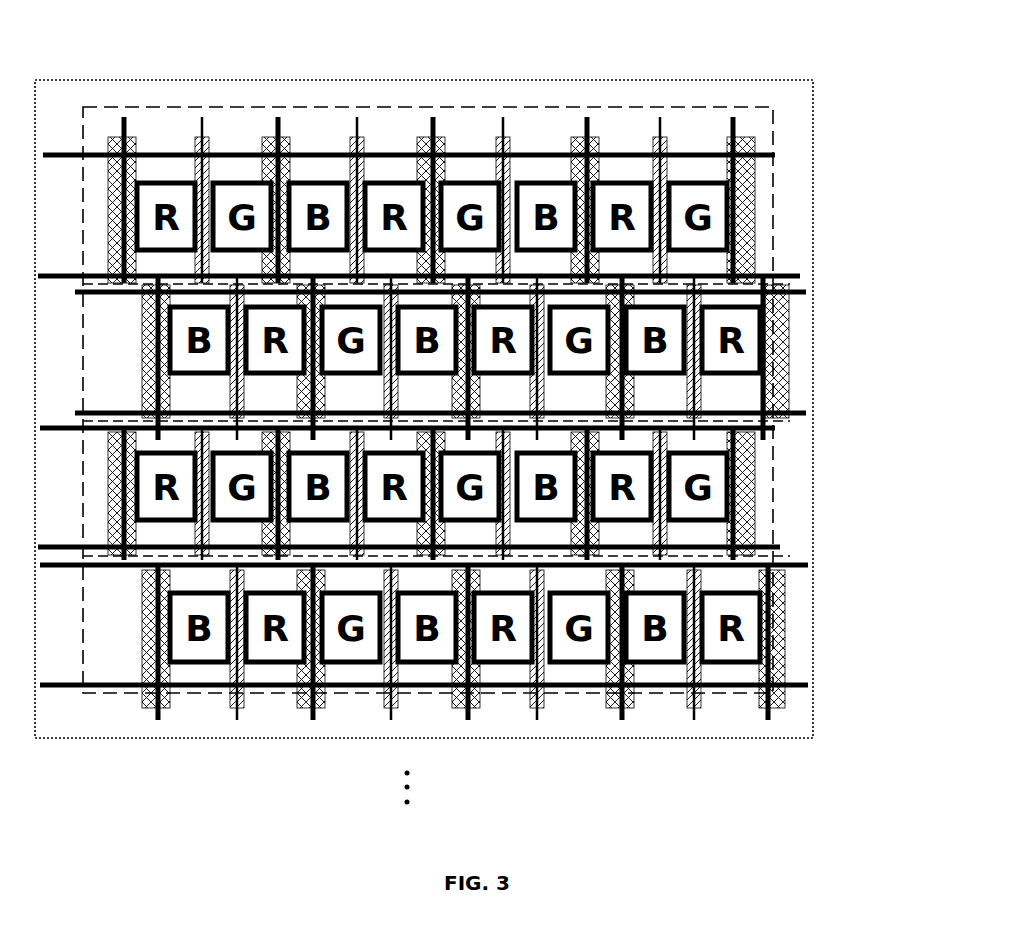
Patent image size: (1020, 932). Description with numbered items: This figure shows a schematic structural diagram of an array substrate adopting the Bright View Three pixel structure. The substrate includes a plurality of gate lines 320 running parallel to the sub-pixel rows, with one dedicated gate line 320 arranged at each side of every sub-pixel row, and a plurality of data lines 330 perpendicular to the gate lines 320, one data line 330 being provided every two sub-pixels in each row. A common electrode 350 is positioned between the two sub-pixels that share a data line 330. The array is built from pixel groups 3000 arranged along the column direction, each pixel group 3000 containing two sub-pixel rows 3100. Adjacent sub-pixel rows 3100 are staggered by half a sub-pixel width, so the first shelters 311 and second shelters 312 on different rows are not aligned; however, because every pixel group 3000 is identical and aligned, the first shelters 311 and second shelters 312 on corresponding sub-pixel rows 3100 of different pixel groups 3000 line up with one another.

The first shelter 311 is at (115, 137).
The second shelter 312 is at (196, 137).
The gate line 320 is at (679, 153).
The data line 330 is at (734, 120).
The common electrode 350 is at (353, 125).
The pixel group 3000 is at (792, 148).
The sub-pixel row 3100 is at (766, 228).